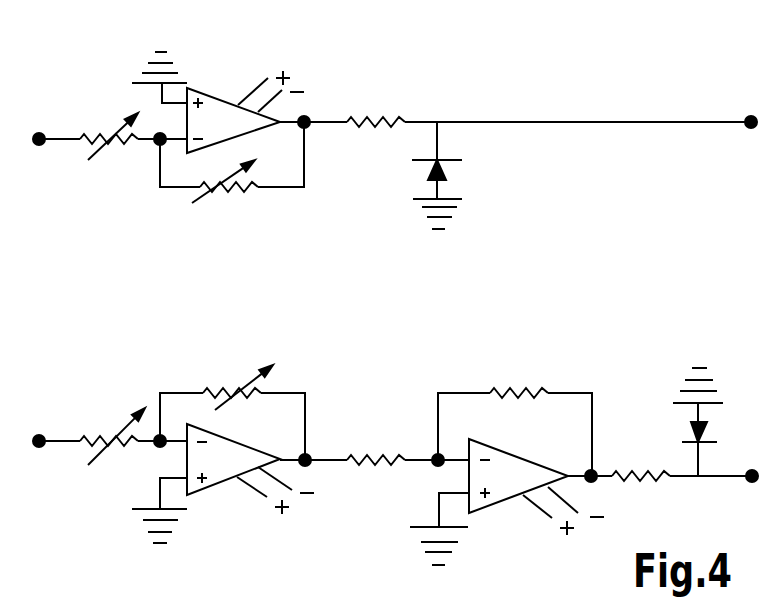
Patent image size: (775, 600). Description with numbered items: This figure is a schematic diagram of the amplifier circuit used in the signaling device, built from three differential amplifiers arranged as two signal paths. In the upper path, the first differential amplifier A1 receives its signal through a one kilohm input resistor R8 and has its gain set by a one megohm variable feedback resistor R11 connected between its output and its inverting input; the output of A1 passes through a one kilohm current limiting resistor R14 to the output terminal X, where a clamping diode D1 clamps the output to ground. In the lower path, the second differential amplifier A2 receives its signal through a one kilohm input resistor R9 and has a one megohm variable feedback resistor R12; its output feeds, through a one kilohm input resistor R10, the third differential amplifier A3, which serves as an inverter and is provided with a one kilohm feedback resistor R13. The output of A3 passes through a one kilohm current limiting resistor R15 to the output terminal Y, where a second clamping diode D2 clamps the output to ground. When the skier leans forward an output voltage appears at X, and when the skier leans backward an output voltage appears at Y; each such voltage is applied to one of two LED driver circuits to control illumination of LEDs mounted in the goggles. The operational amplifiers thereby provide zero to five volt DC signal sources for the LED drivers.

The input resistor R8 is at (109, 147).
The input resistor R9 is at (112, 442).
The input resistor R10 is at (376, 471).
The variable feedback resistor R11 is at (232, 167).
The variable feedback resistor R12 is at (232, 412).
The feedback resistor R13 is at (515, 421).
The current limiting resistor R14 is at (376, 110).
The current limiting resistor R15 is at (641, 486).
The first differential amplifier A1 is at (215, 93).
The second differential amplifier A2 is at (207, 485).
The third differential amplifier A3 is at (493, 507).
The clamping diode D1 is at (453, 175).
The clamping diode D2 is at (709, 422).
The output X is at (759, 124).
The output Y is at (760, 477).